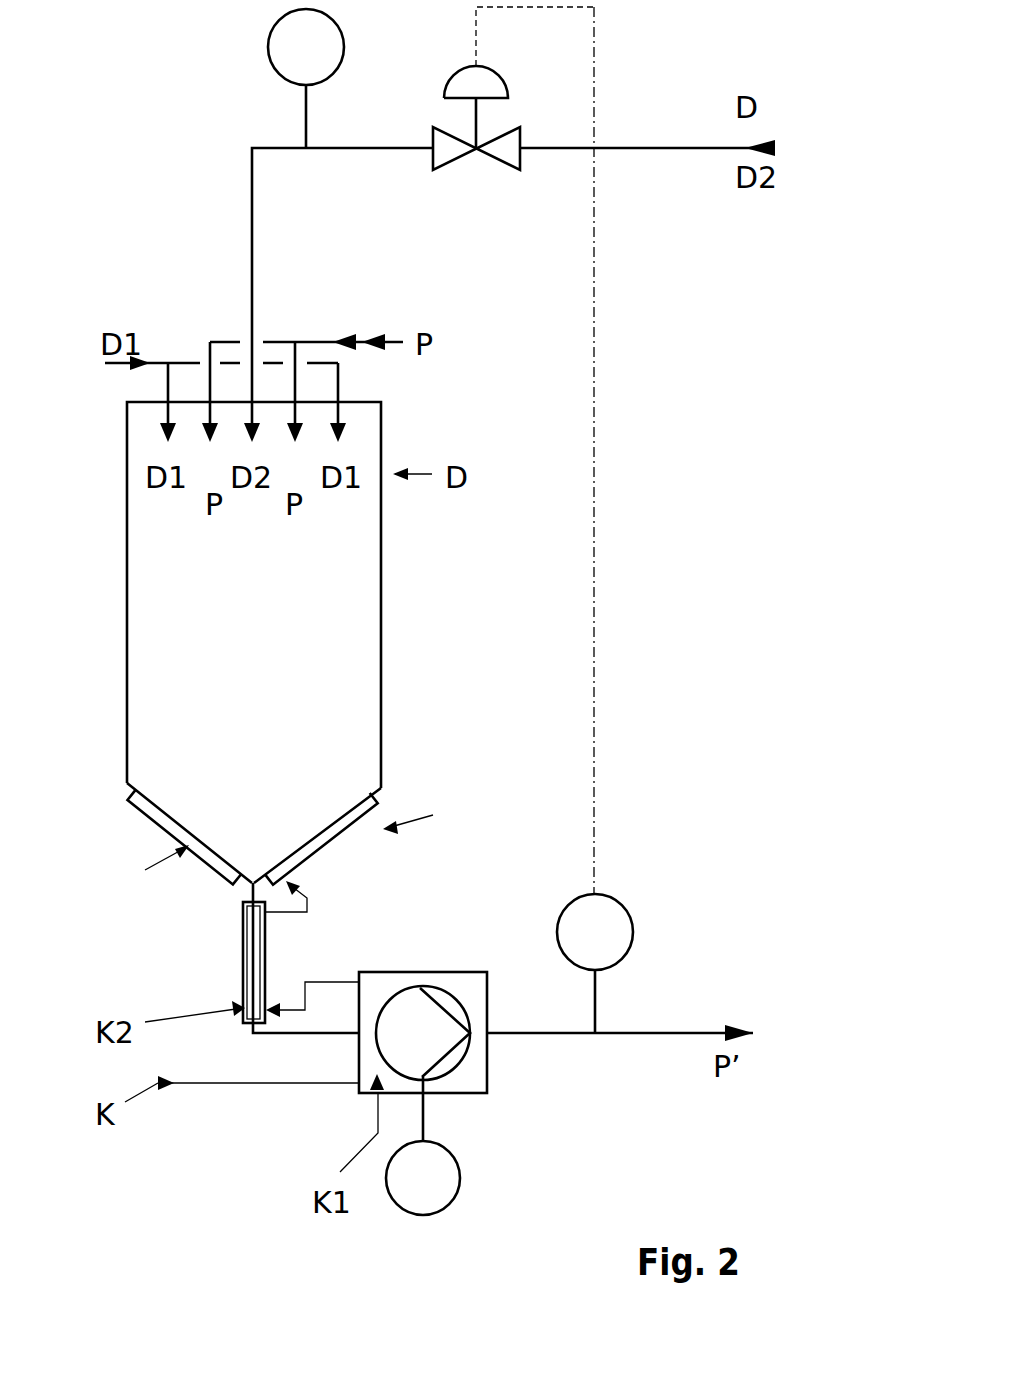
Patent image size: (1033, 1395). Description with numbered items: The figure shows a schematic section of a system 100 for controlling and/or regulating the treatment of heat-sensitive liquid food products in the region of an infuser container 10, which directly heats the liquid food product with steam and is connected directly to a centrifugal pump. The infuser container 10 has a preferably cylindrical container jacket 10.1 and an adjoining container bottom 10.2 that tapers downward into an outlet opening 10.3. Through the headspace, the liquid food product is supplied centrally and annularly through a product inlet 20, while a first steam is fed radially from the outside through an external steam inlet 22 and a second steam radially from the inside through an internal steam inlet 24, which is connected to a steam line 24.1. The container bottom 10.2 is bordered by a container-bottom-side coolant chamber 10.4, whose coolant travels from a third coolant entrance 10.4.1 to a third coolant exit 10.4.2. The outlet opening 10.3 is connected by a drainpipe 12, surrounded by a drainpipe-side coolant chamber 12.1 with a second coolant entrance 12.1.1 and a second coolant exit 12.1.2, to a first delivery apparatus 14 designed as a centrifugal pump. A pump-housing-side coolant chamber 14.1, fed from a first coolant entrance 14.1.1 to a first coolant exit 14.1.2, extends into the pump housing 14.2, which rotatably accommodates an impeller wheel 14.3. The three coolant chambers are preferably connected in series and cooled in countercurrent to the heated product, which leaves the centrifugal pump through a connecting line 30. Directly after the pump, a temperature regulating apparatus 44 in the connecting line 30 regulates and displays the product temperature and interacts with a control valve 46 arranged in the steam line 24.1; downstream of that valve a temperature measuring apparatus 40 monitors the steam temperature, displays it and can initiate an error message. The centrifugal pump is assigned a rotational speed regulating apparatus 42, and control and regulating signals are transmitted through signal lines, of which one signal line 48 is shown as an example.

The infuser container 10 is at (315, 652).
The container jacket 10.1 is at (381, 592).
The container bottom 10.2 is at (353, 806).
The outlet opening 10.3 is at (253, 883).
The container-bottom-side coolant chamber 10.4 is at (310, 851).
The third coolant entrance 10.4.1 is at (302, 895).
The third coolant exit 10.4.2 is at (378, 818).
The drainpipe 12 is at (227, 958).
The drainpipe-side coolant chamber 12.1 is at (248, 922).
The second coolant entrance 12.1.1 is at (287, 1010).
The second coolant exit 12.1.2 is at (285, 912).
The first delivery apparatus 14 is at (474, 1020).
The pump-housing-side coolant chamber 14.1 is at (371, 987).
The first coolant entrance 14.1.1 is at (338, 1033).
The first coolant exit 14.1.2 is at (340, 982).
The pump housing 14.2 is at (487, 982).
The impeller wheel 14.3 is at (419, 1033).
The product inlet 20 is at (333, 342).
The external steam inlet 22 is at (157, 363).
The internal steam inlet 24 is at (252, 320).
The steam line 24.1 is at (632, 148).
The connecting line 30 is at (663, 1033).
The temperature measuring apparatus 40 is at (306, 51).
The rotational speed regulating apparatus 42 is at (423, 1178).
The temperature regulating apparatus 44 is at (595, 932).
The control valve 46 is at (498, 150).
The signal line 48 is at (594, 560).
The system 100 is at (632, 443).